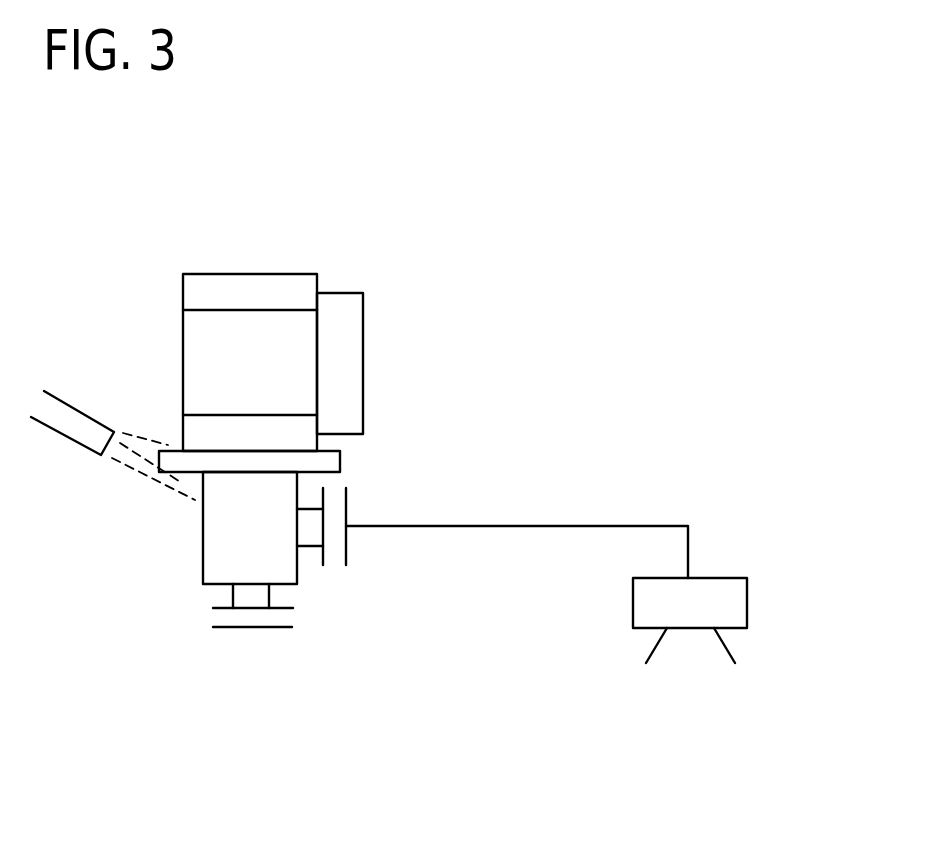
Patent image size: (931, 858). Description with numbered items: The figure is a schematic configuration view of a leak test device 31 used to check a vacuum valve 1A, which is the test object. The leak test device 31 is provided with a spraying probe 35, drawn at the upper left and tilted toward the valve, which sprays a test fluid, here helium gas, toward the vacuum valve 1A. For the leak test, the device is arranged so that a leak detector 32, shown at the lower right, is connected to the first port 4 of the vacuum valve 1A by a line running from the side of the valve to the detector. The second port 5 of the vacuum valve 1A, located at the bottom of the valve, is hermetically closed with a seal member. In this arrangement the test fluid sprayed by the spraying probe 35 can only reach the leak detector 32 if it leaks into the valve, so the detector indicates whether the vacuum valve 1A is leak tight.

The vacuum valve 1A is at (263, 285).
The spraying probe 35 is at (72, 417).
The first port 4 is at (346, 508).
The second port 5 is at (256, 628).
The leak test device 31 is at (613, 284).
The leak detector 32 is at (735, 604).